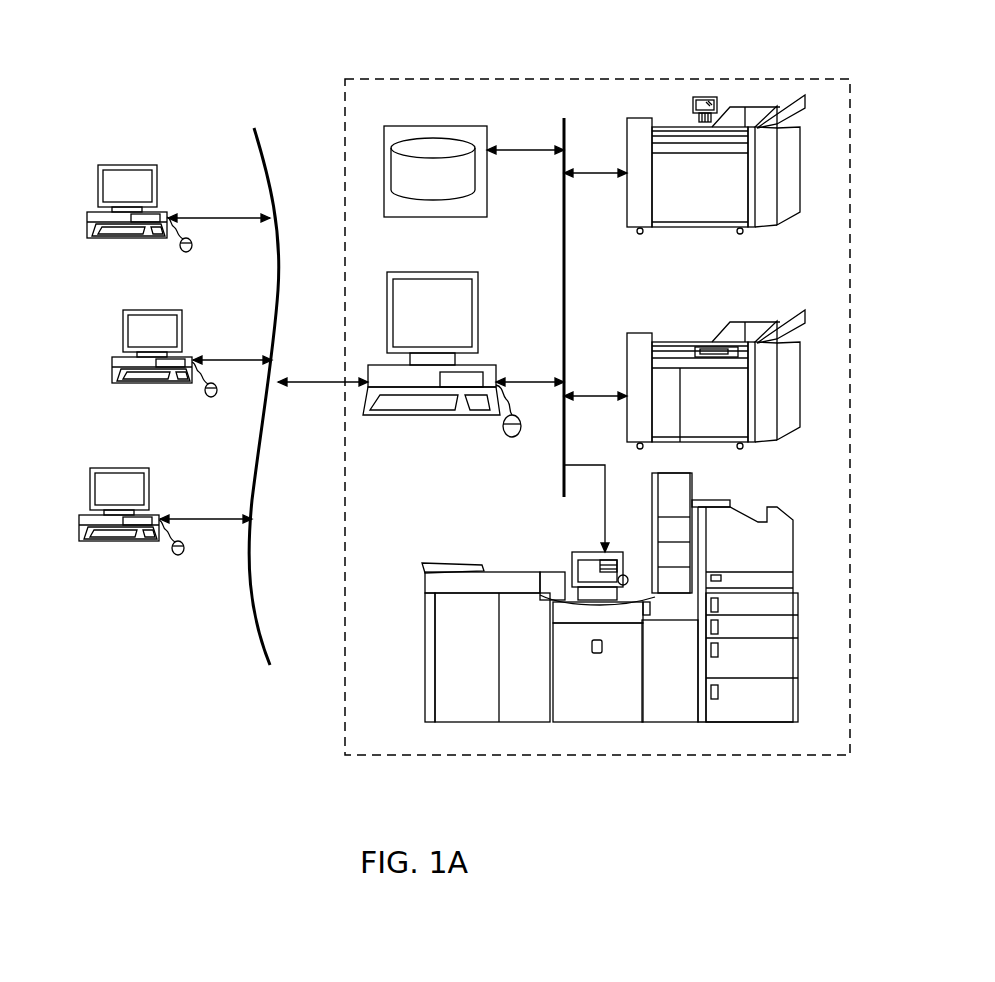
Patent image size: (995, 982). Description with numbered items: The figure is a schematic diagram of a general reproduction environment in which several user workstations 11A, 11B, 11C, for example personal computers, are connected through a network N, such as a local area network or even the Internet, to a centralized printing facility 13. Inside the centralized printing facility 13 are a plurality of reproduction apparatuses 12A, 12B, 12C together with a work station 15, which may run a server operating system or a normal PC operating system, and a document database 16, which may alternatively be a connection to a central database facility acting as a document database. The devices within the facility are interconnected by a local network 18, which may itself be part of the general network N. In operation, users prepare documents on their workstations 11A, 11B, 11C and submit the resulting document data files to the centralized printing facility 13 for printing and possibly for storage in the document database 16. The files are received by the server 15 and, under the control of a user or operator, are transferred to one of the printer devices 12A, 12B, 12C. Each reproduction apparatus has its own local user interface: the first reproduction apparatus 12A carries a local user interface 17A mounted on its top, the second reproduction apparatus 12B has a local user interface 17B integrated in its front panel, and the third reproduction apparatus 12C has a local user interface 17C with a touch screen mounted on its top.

The user workstation 11A is at (98, 188).
The user workstation 11B is at (123, 330).
The user workstation 11C is at (90, 485).
The network N is at (278, 252).
The centralized printing facility 13 is at (398, 79).
The work station 15 is at (478, 340).
The document database 16 is at (487, 205).
The local network 18 is at (563, 290).
The first reproduction apparatus 12A is at (706, 143).
The second reproduction apparatus 12B is at (706, 380).
The third reproduction apparatus 12C is at (610, 593).
The local user interface 17A is at (693, 97).
The local user interface 17B is at (708, 347).
The local user interface 17C is at (572, 560).